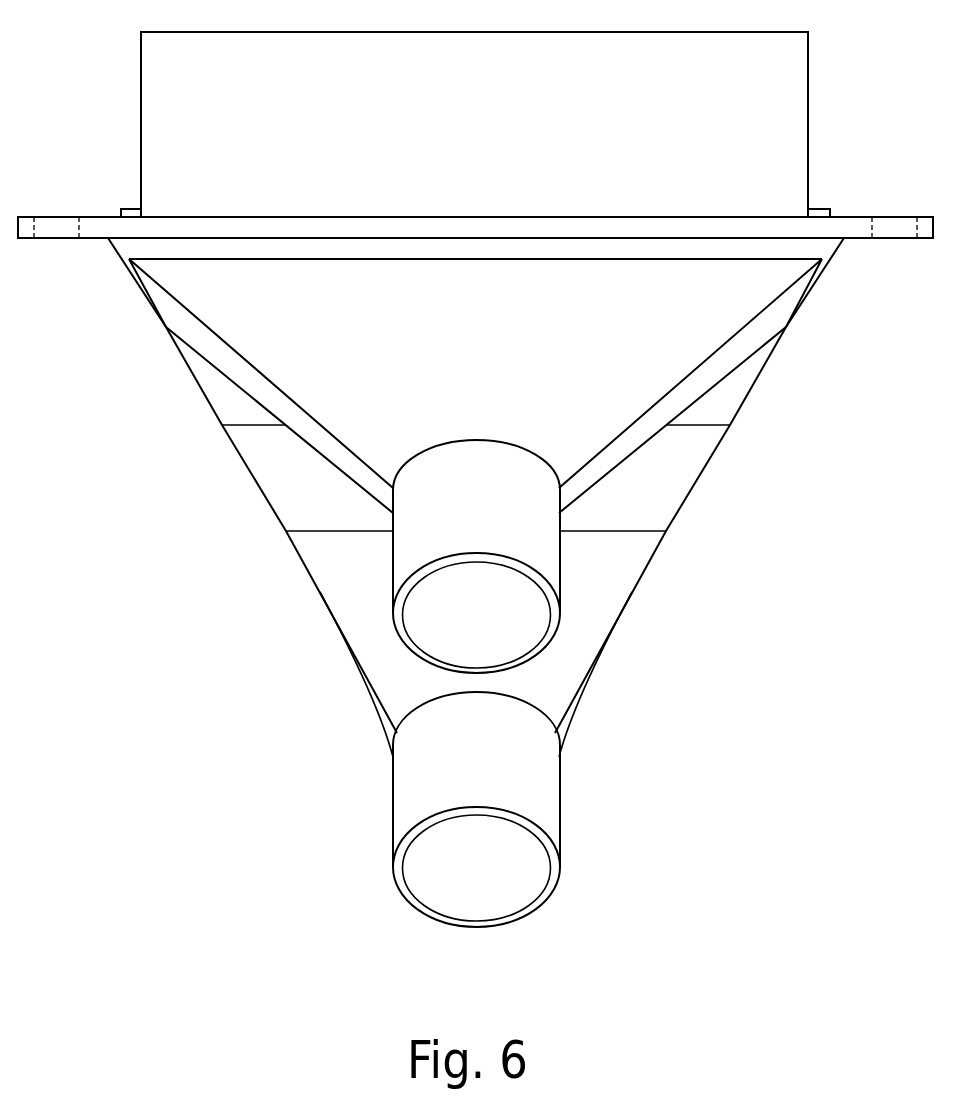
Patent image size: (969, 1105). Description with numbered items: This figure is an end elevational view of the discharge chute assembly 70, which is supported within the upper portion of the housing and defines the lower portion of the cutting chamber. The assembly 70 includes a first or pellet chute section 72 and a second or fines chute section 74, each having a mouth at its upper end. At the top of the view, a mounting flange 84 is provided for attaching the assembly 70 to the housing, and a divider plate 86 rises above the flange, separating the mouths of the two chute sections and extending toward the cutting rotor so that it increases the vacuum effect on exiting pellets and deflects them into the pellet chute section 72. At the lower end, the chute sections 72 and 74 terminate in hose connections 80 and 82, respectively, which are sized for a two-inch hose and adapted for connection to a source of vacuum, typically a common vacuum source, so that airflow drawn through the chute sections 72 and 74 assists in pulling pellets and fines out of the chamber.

The discharge chute assembly 70 is at (468, 582).
The pellet chute section 72 is at (700, 495).
The fines chute section 74 is at (730, 382).
The hose connection 80 is at (518, 885).
The hose connection 82 is at (514, 637).
The mounting flange 84 is at (95, 227).
The divider plate 86 is at (789, 108).